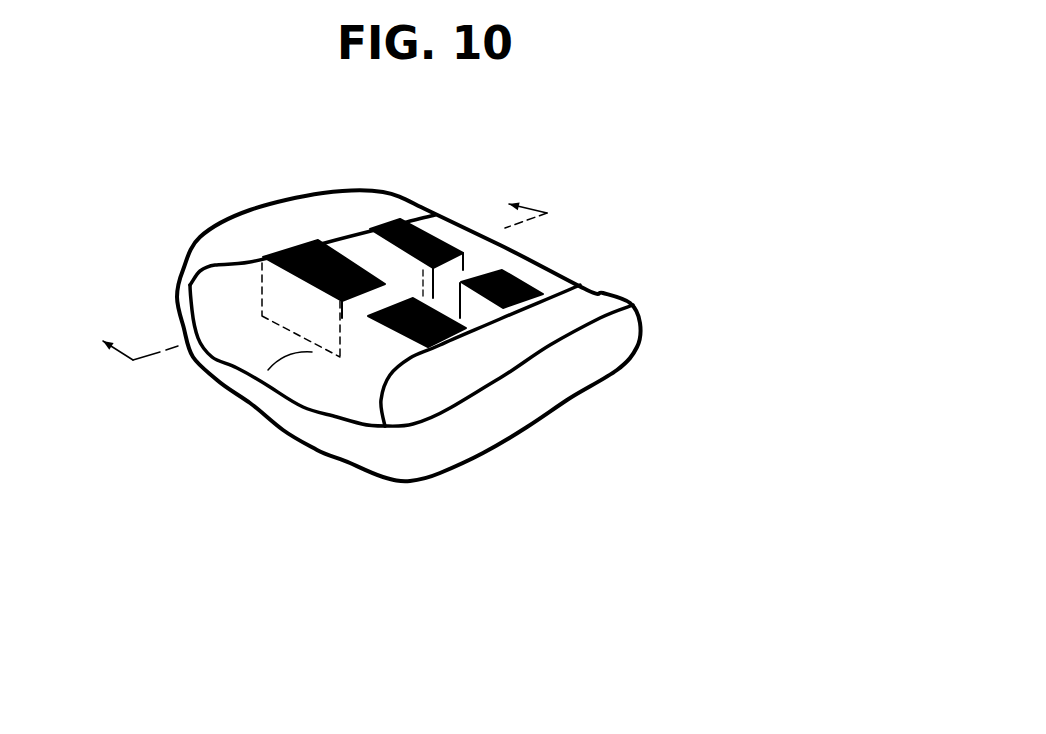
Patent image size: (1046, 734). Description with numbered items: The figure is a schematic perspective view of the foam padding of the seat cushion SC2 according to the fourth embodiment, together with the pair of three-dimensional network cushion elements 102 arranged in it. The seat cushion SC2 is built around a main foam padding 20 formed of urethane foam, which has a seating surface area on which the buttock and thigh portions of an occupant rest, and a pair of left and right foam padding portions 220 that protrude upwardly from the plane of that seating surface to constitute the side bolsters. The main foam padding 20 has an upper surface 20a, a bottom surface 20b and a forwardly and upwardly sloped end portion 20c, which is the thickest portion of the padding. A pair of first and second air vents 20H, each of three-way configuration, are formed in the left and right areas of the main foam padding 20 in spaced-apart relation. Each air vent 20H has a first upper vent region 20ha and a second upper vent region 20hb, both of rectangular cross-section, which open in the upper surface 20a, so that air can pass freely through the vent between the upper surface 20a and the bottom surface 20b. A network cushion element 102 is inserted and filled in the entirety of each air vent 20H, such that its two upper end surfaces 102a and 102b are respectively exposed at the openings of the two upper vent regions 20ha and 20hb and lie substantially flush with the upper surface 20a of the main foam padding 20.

The seat cushion SC2 is at (691, 236).
The main foam padding 20 is at (645, 316).
The upper surface of the main foam padding 20a is at (215, 298).
The bottom surface of the main foam padding 20b is at (410, 483).
The forwardly and upwardly sloped end portion 20c is at (341, 312).
The upwardly-protruding foam padding portion 220 is at (307, 217).
The three-way air vent 20H is at (262, 318).
The first upper vent region 20ha is at (320, 292).
The second upper vent region 20hb is at (448, 240).
The network cushion element 102 is at (463, 304).
The upper end surface of the network cushion element 102a is at (273, 257).
The upper end surface of the network cushion element 102b is at (390, 228).